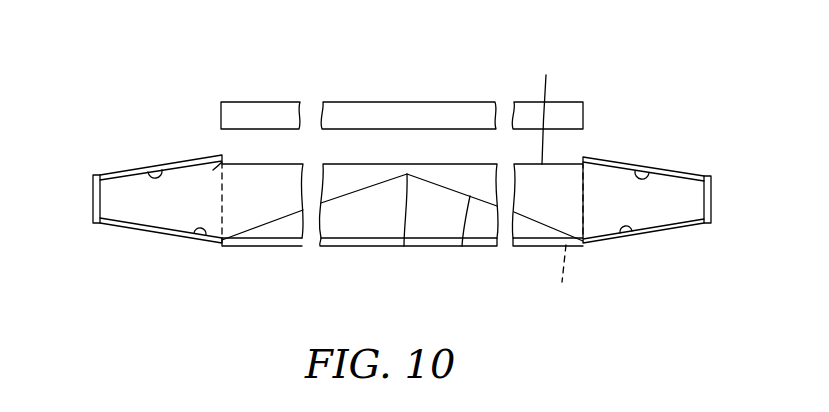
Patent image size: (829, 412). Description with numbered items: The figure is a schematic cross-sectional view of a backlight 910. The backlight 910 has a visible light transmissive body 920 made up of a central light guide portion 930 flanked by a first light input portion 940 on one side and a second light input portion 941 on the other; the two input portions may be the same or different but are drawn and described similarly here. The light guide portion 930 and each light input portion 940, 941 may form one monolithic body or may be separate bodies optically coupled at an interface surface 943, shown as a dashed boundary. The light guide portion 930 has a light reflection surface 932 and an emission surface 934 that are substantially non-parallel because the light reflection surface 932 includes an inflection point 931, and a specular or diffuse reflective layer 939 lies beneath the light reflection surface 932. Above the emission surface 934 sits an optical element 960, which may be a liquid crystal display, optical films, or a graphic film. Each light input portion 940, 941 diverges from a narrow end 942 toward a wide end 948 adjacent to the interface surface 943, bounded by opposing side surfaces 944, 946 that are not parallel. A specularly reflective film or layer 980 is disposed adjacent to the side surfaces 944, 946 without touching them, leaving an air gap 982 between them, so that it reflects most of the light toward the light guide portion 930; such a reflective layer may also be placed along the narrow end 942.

The backlight 910 is at (380, 57).
The visible light transmissive body 920 is at (626, 72).
The light guide portion 930 is at (534, 208).
The inflection point 931 is at (405, 248).
The light reflection surface 932 is at (462, 248).
The emission surface 934 is at (550, 108).
The reflective layer 939 is at (341, 248).
The first light input portion 940 is at (96, 151).
The second light input portion 941 is at (704, 147).
The narrow end 942 is at (93, 197).
The interface surface 943 is at (228, 245).
The side surface 944 is at (200, 236).
The side surface 946 is at (153, 171).
The wide end 948 is at (213, 170).
The optical element 960 is at (462, 102).
The specularly reflective film or layer 980 is at (118, 229).
The air gap 982 is at (137, 220).